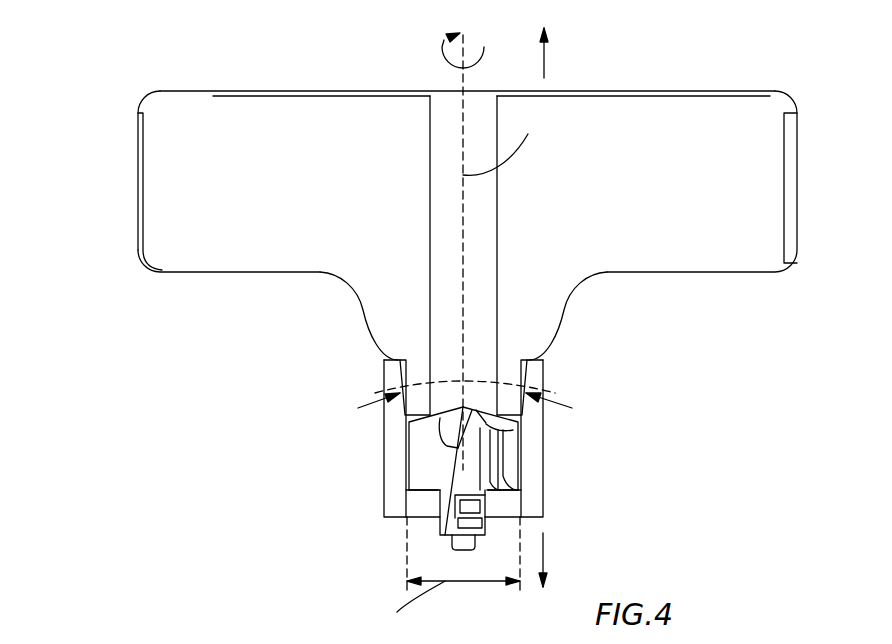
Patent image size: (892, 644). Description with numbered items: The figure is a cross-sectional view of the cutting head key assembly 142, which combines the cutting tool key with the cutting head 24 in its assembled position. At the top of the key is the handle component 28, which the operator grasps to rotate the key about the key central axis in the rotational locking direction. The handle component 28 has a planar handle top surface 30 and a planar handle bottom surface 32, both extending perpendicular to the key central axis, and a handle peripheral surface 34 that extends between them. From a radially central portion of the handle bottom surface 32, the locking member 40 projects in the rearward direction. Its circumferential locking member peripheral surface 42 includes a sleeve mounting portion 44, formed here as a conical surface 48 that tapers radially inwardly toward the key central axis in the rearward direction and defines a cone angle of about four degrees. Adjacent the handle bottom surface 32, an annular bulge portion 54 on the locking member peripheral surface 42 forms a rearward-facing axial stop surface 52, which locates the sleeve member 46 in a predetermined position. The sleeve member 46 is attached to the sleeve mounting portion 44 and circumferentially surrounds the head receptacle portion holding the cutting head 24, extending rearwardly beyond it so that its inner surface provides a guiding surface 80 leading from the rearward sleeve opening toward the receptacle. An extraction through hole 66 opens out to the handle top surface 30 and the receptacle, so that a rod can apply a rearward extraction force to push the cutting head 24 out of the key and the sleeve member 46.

The cutting head key assembly 142 is at (742, 68).
The handle component 28 is at (186, 219).
The handle top surface 30 is at (193, 91).
The handle peripheral surface 34 is at (137, 162).
The handle bottom surface 32 is at (193, 272).
The extraction through hole 66 is at (448, 147).
The locking member 40 is at (553, 365).
The locking member peripheral surface 42 is at (365, 350).
The annular bulge portion 54 is at (575, 315).
The sleeve member 46 is at (375, 468).
The axial stop surface 52 is at (542, 368).
The sleeve mounting portion 44 is at (403, 390).
The conical surface 48 is at (512, 387).
The cutting head 24 is at (530, 456).
The guiding surface 80 is at (507, 502).